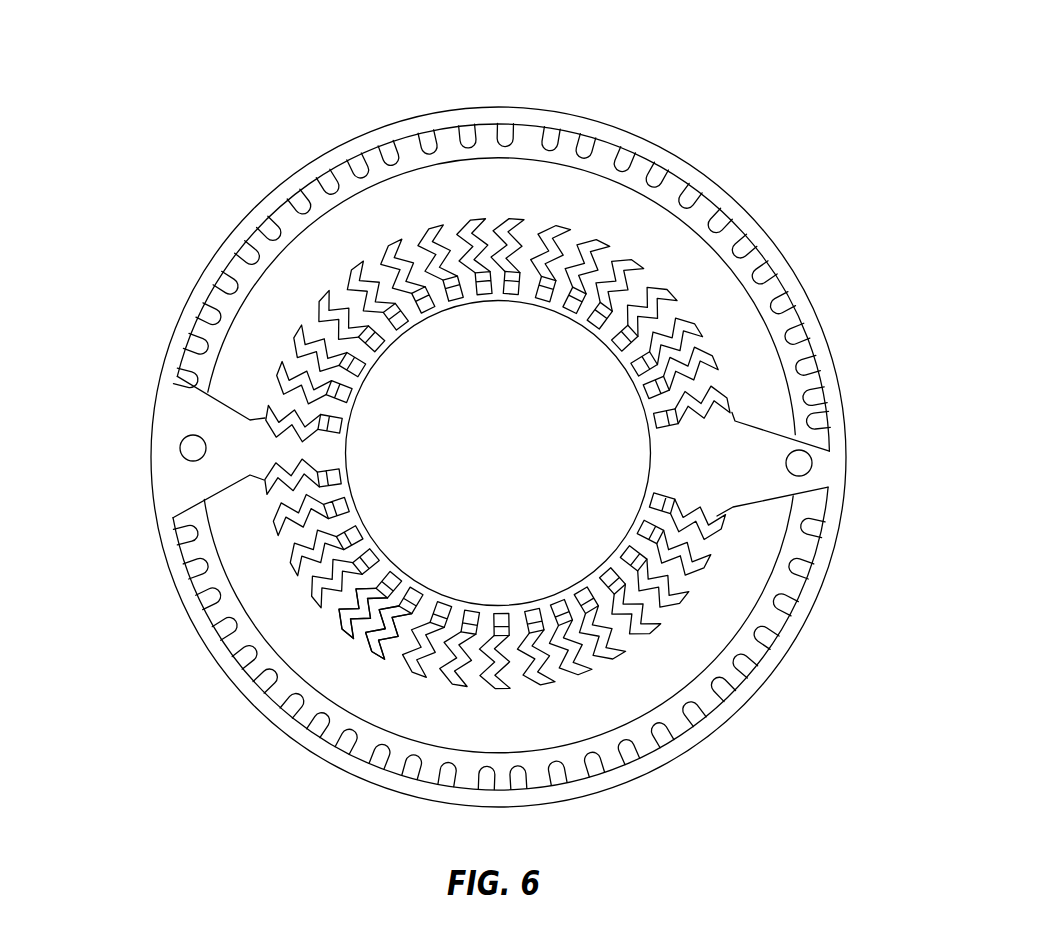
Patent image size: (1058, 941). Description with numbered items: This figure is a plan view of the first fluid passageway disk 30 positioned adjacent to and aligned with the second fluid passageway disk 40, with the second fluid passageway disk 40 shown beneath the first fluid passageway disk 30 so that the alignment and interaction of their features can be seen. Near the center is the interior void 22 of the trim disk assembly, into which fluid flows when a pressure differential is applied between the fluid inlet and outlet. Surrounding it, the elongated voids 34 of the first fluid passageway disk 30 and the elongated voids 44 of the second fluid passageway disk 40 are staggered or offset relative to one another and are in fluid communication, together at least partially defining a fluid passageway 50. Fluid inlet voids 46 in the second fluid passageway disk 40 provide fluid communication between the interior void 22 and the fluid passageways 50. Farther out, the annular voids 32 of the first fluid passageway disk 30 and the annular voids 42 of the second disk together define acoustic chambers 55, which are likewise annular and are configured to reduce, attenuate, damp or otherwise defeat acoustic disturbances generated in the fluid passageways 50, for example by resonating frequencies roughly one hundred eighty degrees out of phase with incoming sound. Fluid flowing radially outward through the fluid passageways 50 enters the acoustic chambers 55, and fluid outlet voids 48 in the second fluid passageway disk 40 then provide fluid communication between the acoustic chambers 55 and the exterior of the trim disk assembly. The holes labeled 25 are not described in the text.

The interior void 22 is at (450, 368).
The mounting hole 25 is at (193, 448).
The first fluid passageway disk 30 is at (756, 99).
The second fluid passageway disk 40 is at (496, 428).
The annular voids 32 is at (548, 190).
The annular voids 42 is at (572, 200).
The acoustic chambers 55 is at (668, 45).
The elongated voids 34 is at (676, 302).
The elongated voids 44 is at (664, 284).
The fluid passageway 50 is at (869, 222).
The fluid inlet voids 46 is at (383, 585).
The fluid outlet voids 48 is at (470, 130).